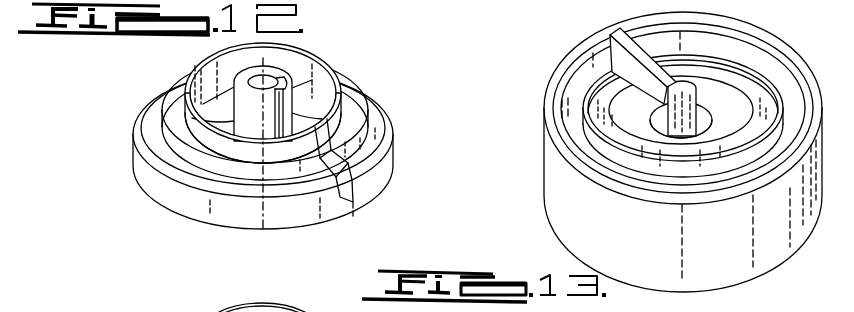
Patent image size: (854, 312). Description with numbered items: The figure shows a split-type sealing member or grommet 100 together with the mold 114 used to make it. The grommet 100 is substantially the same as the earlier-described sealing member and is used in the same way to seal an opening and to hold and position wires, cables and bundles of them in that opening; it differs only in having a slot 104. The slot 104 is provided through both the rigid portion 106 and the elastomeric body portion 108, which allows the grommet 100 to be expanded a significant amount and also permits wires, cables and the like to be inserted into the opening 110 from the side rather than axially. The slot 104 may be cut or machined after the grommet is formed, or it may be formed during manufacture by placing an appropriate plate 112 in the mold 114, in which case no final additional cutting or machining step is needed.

In FIG. 12, the sealing member 100 is at (118, 135).
In FIG. 12, the slot 104 is at (344, 196).
In FIG. 12, the rigid portion 106 is at (346, 96).
In FIG. 12, the elastomeric body portion 108 is at (383, 151).
In FIG. 12, the opening 110 is at (268, 80).
In FIG. 13, the plate 112 is at (618, 32).
In FIG. 13, the mold 114 is at (544, 171).